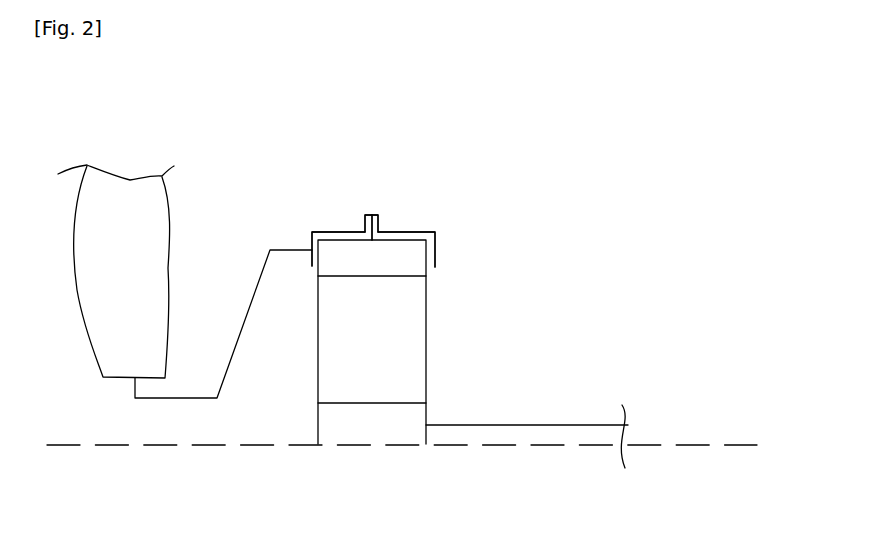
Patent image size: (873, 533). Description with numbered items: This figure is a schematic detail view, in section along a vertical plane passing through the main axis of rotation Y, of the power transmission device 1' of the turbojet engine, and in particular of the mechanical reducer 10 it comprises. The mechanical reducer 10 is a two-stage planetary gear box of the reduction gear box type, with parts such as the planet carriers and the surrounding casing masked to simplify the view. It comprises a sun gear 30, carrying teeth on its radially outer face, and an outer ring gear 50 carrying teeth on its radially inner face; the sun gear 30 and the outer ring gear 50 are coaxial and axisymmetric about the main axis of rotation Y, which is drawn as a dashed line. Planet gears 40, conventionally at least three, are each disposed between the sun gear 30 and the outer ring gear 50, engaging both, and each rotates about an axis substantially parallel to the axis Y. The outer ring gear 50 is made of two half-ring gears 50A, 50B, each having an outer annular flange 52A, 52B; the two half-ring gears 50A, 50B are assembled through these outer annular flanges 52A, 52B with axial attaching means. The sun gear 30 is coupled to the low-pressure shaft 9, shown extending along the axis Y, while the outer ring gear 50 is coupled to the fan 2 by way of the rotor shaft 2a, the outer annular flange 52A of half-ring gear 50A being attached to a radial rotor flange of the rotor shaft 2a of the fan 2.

The power transmission device 1' is at (629, 123).
The fan 2 is at (125, 198).
The rotor shaft 2a is at (243, 327).
The low-pressure shaft 9 is at (565, 423).
The mechanical reducer 10 is at (475, 255).
The sun gear 30 is at (380, 425).
The planet gears 40 is at (348, 350).
The outer ring gear 50 is at (402, 255).
The half-ring gear 50A is at (322, 230).
The half-ring gear 50B is at (423, 228).
The outer annular flange 52A is at (360, 213).
The outer annular flange 52B is at (387, 215).
The main axis of rotation Y is at (409, 446).